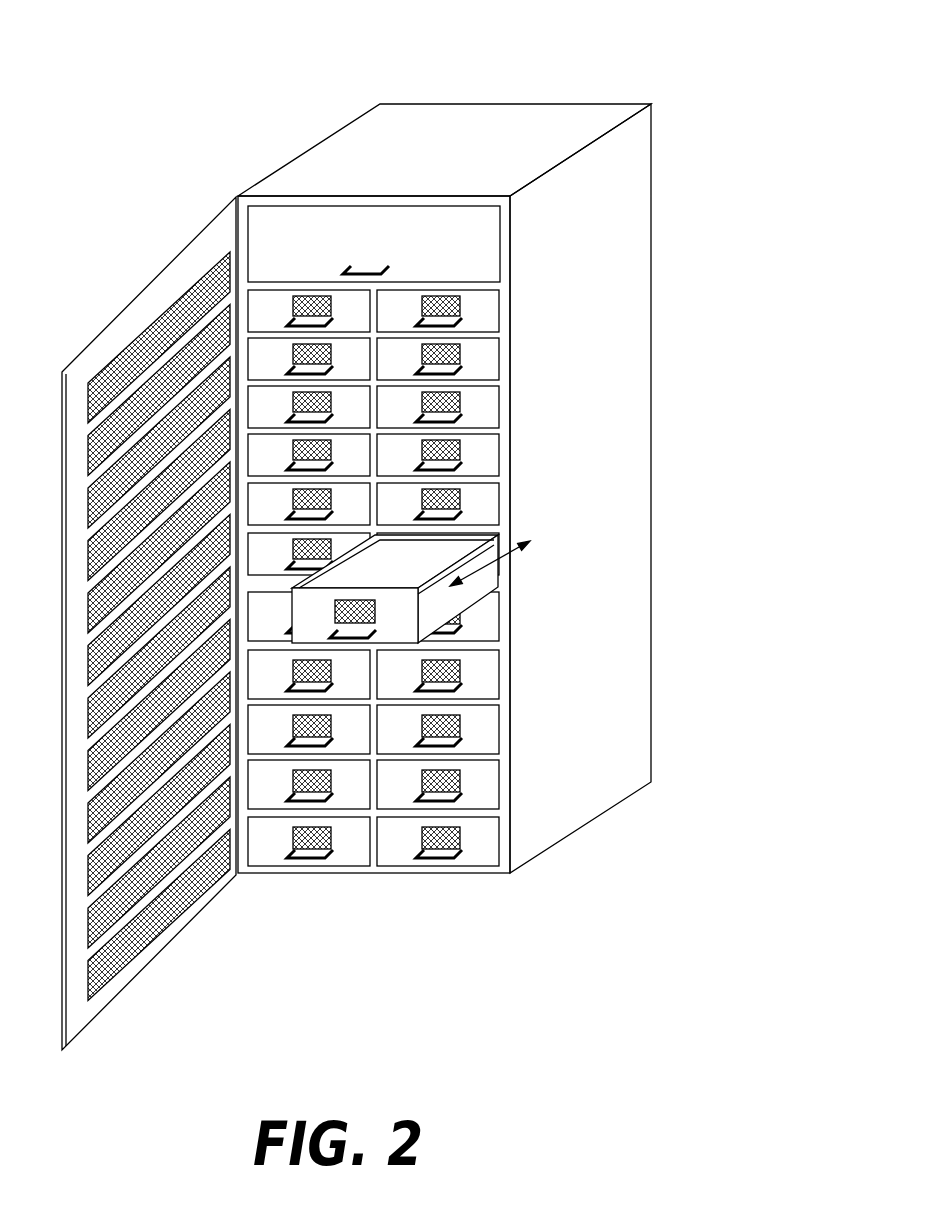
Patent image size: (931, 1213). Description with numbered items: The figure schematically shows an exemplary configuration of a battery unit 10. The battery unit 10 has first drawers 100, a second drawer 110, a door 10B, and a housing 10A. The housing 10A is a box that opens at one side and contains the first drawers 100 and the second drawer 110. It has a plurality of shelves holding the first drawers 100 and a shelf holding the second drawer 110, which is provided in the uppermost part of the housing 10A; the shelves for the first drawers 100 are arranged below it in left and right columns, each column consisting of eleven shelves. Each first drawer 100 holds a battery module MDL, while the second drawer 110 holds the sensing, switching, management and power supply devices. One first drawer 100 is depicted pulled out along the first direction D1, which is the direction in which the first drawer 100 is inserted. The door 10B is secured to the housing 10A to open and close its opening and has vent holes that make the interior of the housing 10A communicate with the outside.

The battery unit 10 is at (356, 527).
The housing 10A is at (398, 104).
The door 10B is at (135, 306).
The second drawer 110 is at (497, 263).
The battery module MDL is at (440, 568).
The first drawer 100 is at (488, 580).
The first direction D1 is at (510, 557).